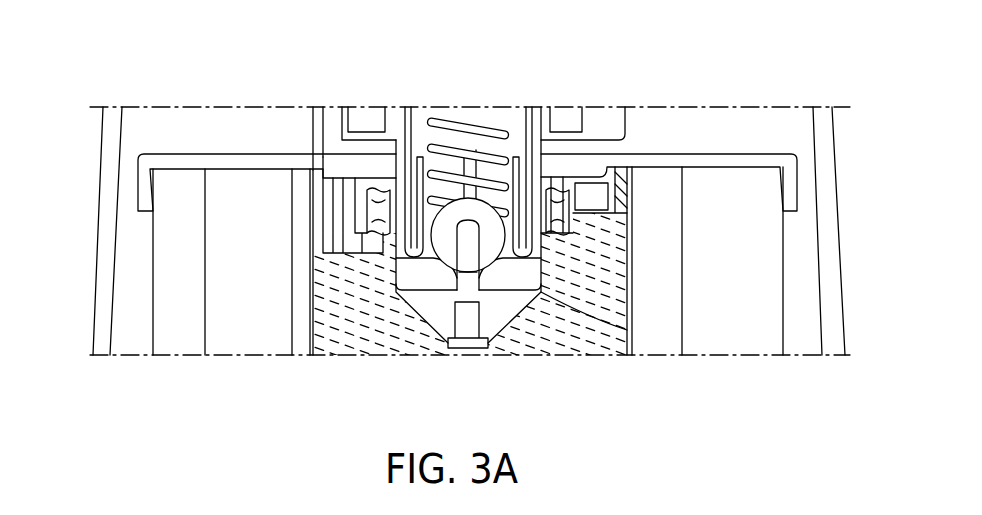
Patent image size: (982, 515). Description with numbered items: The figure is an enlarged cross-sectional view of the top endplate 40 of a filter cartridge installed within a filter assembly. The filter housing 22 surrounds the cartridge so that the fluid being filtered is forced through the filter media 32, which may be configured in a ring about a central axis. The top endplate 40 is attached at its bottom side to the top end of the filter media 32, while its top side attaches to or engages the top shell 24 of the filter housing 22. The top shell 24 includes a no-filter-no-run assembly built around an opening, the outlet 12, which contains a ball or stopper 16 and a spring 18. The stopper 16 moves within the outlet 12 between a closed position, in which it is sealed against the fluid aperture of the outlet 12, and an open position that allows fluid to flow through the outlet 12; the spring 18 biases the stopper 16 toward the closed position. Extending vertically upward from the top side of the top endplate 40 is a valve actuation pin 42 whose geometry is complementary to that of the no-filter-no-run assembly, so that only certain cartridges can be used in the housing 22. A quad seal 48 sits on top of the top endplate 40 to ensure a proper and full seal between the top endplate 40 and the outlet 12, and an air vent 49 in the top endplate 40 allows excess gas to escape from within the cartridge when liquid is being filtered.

The outlet 12 is at (421, 115).
The stopper 16 is at (477, 196).
The spring 18 is at (449, 120).
The filter housing 22 is at (92, 311).
The top shell 24 is at (95, 224).
The filter media 32 is at (170, 323).
The top endplate 40 is at (172, 152).
The NFNR valve actuation pin 42 is at (491, 232).
The quad seal 48 is at (388, 200).
The air vent 49 is at (323, 155).